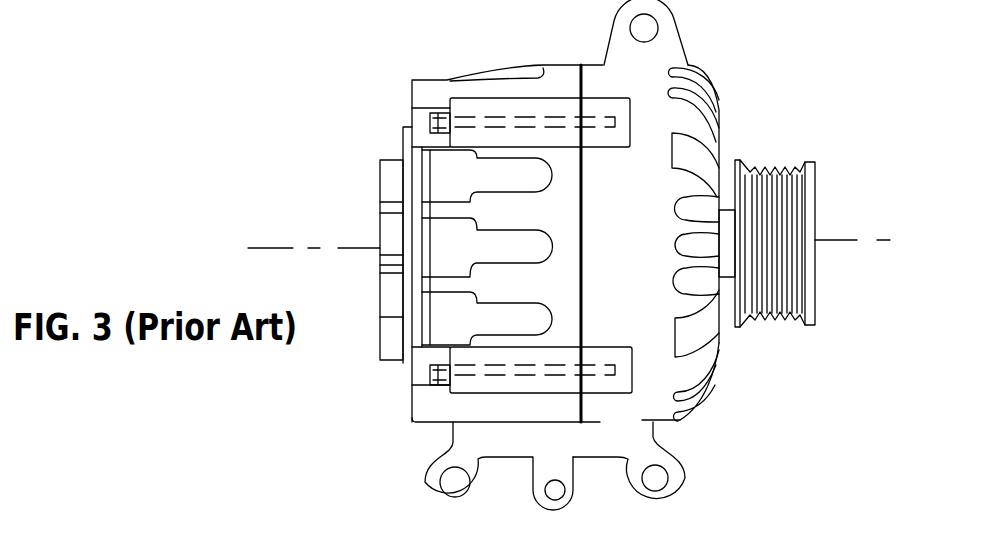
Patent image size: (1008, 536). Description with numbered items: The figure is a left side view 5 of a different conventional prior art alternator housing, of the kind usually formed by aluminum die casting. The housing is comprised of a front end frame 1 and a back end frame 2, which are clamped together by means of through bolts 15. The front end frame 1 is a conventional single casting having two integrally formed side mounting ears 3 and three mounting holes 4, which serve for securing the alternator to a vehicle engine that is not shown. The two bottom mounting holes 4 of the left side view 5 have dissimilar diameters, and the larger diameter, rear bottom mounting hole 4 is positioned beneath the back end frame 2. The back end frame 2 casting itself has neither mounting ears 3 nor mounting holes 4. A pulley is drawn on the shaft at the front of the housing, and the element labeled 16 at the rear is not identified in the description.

The front end frame 1 is at (643, 122).
The back end frame 2 is at (433, 95).
The mounting ears 3 is at (615, 53).
The mounting holes 4 is at (643, 30).
The left side view 5 is at (770, 359).
The through bolts 15 is at (428, 119).
The end cap 16 is at (357, 248).